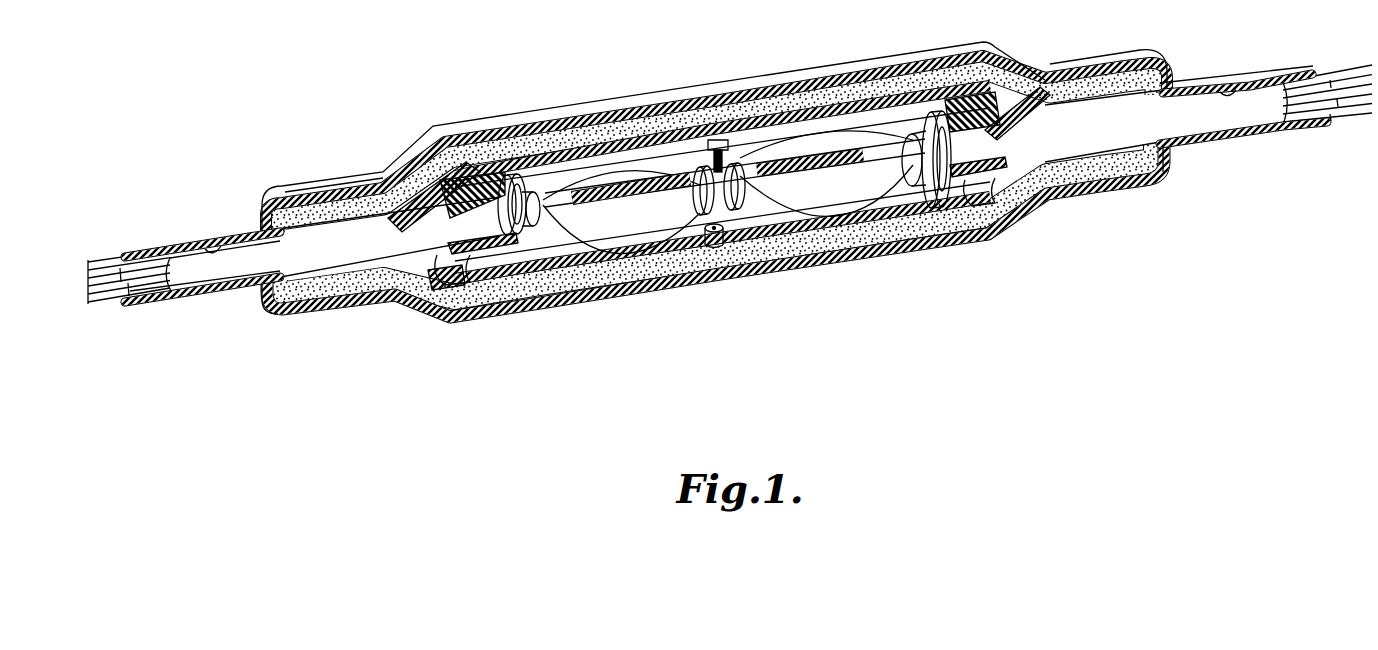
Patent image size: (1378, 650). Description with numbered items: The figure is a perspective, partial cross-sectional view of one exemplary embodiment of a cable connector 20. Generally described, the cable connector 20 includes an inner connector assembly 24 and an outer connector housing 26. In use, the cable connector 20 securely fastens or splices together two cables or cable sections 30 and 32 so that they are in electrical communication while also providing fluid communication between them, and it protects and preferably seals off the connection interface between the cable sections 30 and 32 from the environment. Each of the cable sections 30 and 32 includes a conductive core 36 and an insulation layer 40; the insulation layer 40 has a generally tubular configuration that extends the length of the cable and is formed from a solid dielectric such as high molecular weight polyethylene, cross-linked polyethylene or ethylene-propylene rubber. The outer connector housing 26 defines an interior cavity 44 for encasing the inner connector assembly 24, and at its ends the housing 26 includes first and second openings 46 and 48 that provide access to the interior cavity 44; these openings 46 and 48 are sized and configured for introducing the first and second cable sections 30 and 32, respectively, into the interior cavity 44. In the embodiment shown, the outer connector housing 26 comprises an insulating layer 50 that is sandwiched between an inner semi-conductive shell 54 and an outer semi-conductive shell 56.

The cable connector 20 is at (251, 105).
The inner connector assembly 24 is at (1007, 121).
The outer connector housing 26 is at (379, 164).
The first cable section 30 is at (227, 273).
The second cable section 32 is at (1220, 120).
The conductive core 36 is at (613, 207).
The insulation layer 40 is at (543, 203).
The interior cavity 44 is at (455, 320).
The first opening 46 is at (207, 250).
The second opening 48 is at (1233, 93).
The insulating layer 50 is at (347, 308).
The inner semi-conductive shell 54 is at (400, 300).
The outer semi-conductive shell 56 is at (287, 318).